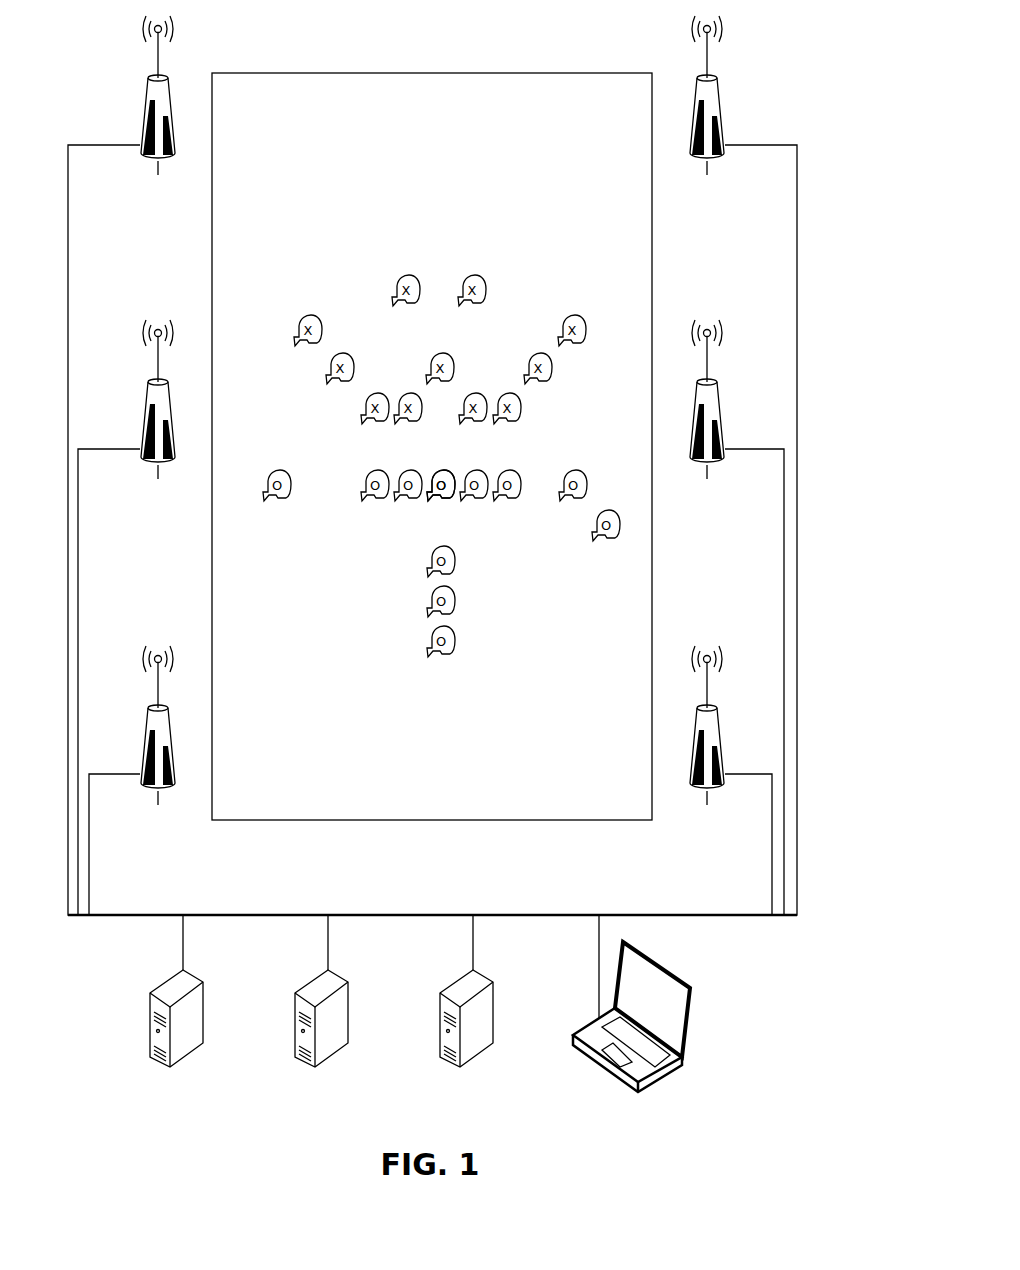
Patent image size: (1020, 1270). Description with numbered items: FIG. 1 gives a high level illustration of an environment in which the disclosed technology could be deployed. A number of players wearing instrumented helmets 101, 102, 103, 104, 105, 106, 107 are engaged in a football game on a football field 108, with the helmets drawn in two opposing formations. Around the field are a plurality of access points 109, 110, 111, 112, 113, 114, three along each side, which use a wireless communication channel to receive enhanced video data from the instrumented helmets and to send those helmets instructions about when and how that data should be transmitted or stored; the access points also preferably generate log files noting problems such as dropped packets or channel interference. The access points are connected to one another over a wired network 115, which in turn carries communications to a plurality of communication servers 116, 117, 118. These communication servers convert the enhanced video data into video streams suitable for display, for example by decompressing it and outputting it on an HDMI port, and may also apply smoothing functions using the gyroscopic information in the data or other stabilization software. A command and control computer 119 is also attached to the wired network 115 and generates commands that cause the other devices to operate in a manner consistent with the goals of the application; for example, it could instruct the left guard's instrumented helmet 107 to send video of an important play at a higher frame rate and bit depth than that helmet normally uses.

The instrumented helmet 101 is at (440, 548).
The instrumented helmet 102 is at (277, 505).
The instrumented helmet 103 is at (606, 545).
The instrumented helmet 104 is at (350, 355).
The instrumented helmet 105 is at (438, 356).
The instrumented helmet 106 is at (532, 361).
The instrumented helmet 107 is at (402, 503).
The football field 108 is at (256, 826).
The access point 109 is at (158, 740).
The access point 110 is at (158, 414).
The access point 111 is at (158, 110).
The access point 112 is at (707, 110).
The access point 113 is at (707, 414).
The access point 114 is at (707, 740).
The wired network 115 is at (111, 918).
The communication server 116 is at (208, 1012).
The communication server 117 is at (353, 1012).
The communication server 118 is at (498, 1012).
The command and control computer 119 is at (697, 1012).